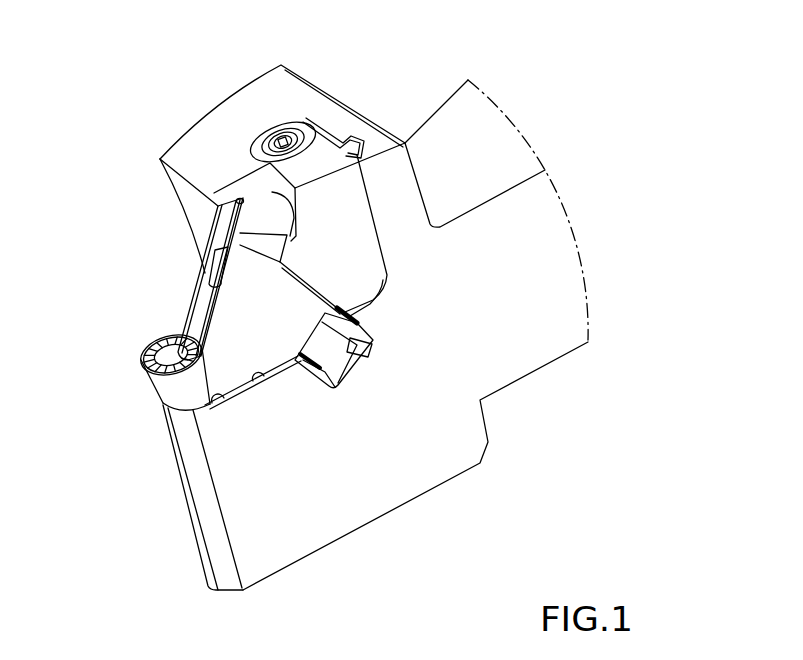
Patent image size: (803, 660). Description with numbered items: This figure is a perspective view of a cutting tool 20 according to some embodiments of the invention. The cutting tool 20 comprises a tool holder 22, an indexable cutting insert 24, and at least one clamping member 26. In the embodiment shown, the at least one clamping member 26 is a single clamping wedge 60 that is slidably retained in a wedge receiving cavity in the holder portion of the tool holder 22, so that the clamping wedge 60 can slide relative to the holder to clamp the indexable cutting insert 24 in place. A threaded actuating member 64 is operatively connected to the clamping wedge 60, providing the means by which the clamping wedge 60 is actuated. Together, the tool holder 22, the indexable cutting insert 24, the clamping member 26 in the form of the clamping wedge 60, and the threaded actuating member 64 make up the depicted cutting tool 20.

The cutting tool 20 is at (158, 192).
The tool holder 22 is at (412, 342).
The indexable cutting insert 24 is at (258, 315).
The clamping member 26 is at (337, 213).
The clamping wedge 60 is at (352, 236).
The threaded actuating member 64 is at (270, 133).